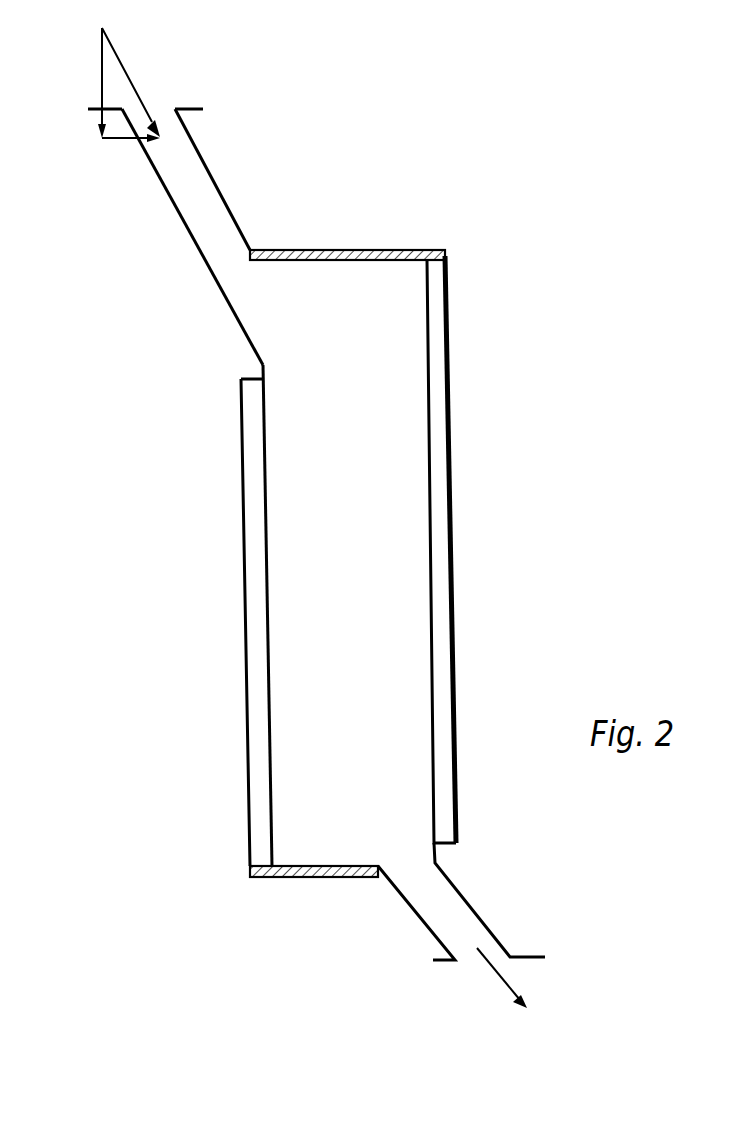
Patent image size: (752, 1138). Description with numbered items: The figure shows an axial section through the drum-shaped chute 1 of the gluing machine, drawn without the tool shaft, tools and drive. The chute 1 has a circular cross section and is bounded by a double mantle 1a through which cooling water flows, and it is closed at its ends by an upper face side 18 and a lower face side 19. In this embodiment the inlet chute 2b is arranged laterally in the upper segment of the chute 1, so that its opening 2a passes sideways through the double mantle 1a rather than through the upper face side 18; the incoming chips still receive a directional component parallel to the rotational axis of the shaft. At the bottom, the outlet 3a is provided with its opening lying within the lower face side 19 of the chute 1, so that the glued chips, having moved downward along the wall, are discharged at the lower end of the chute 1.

The drum-shaped chute 1 is at (243, 553).
The double mantle 1a is at (257, 672).
The opening of the inlet 2a is at (250, 317).
The inlet chute 2b is at (168, 108).
The outlet 3a is at (410, 860).
The upper face side 18 is at (383, 250).
The lower face side 19 is at (297, 877).